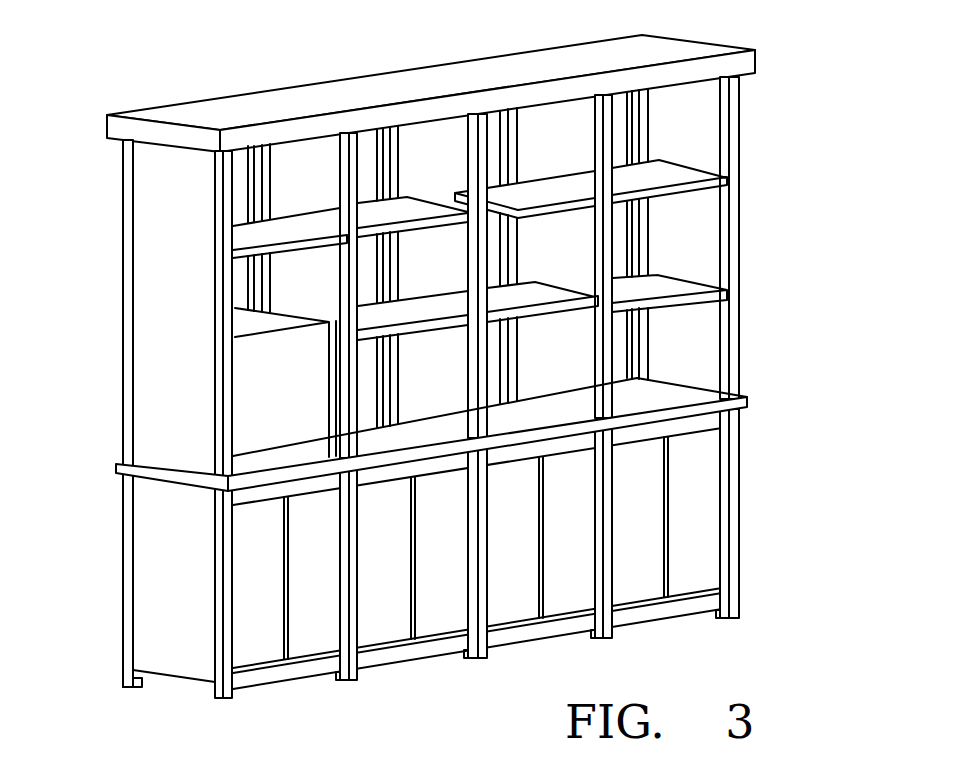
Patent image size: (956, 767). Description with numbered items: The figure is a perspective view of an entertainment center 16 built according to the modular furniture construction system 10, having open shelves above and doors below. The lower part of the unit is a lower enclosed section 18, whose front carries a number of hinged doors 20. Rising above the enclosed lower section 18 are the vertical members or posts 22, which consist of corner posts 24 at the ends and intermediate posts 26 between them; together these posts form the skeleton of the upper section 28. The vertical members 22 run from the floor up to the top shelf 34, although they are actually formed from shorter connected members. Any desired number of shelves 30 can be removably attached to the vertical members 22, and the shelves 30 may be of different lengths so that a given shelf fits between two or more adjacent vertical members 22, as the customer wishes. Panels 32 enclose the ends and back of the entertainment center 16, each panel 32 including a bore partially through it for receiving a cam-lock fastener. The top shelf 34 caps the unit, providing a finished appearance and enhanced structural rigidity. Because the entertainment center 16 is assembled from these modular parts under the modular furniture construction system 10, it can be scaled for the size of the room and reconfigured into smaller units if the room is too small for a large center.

The modular furniture construction system 10 is at (156, 68).
The entertainment center 16 is at (690, 38).
The lower enclosed section 18 is at (742, 510).
The hinged doors 20 is at (308, 652).
The vertical members 22 is at (741, 122).
The corner posts 24 is at (650, 233).
The intermediate posts 26 is at (398, 262).
The upper section 28 is at (122, 207).
The shelves 30 is at (688, 193).
The panels 32 is at (413, 179).
The top shelf 34 is at (323, 78).